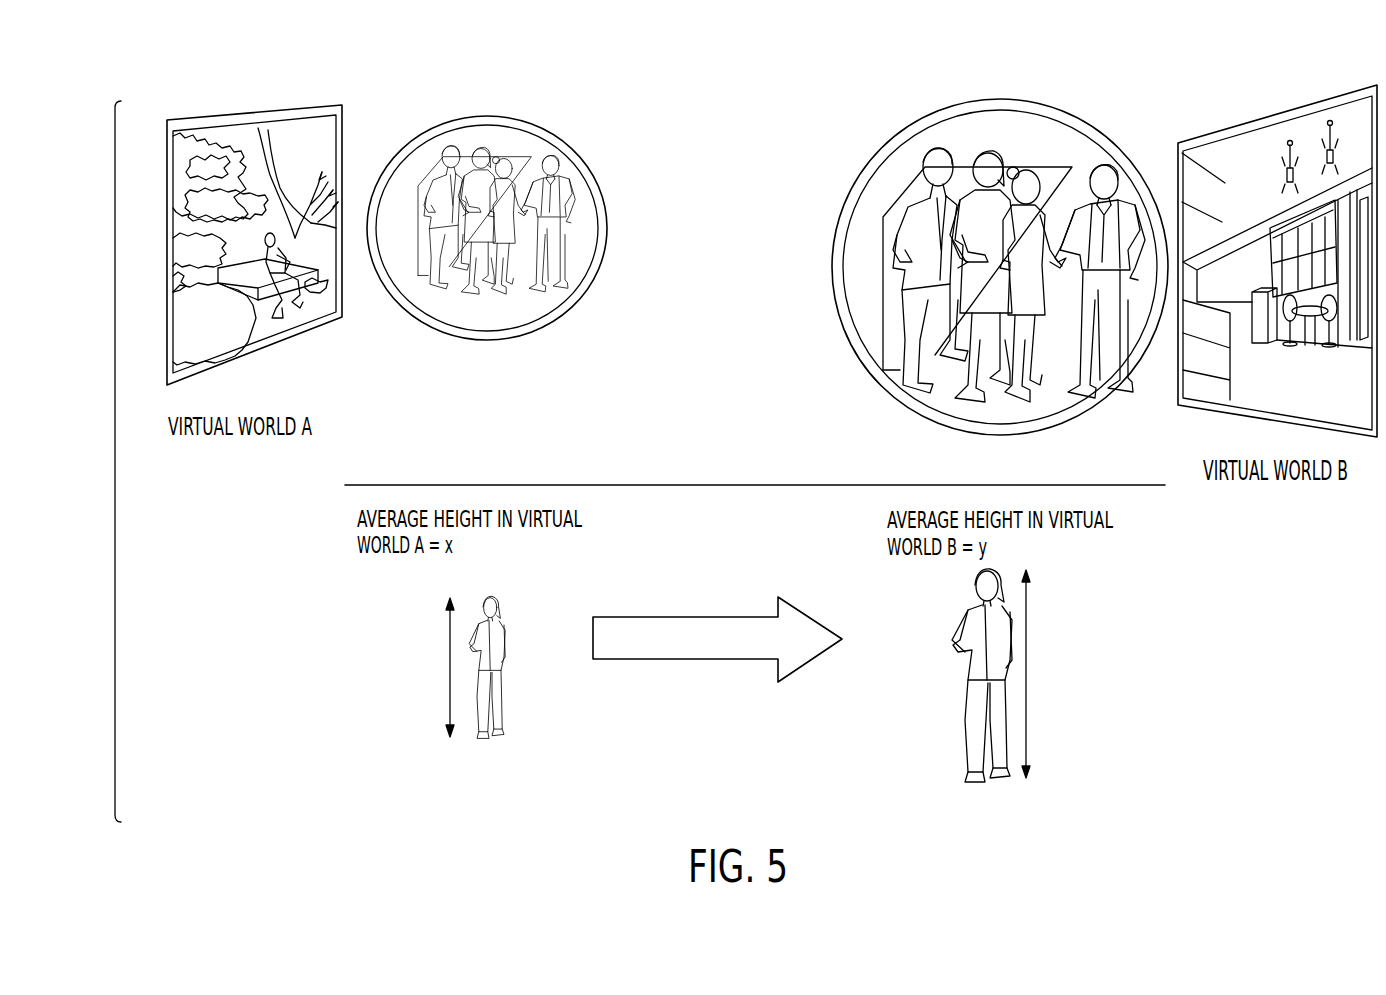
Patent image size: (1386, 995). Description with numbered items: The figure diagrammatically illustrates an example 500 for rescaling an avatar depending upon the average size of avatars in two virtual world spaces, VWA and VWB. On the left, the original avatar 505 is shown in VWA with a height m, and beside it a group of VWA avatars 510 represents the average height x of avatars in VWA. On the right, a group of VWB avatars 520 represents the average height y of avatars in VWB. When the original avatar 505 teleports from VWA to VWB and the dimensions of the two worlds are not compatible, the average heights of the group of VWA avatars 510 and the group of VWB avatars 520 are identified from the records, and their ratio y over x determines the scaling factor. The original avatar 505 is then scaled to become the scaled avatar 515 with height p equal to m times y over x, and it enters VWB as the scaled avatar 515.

The example 500 is at (166, 73).
The original avatar 505 is at (473, 770).
The group of VWA avatars 510 is at (598, 150).
The scaled avatar 515 is at (973, 795).
The group of VWB avatars 520 is at (1122, 123).